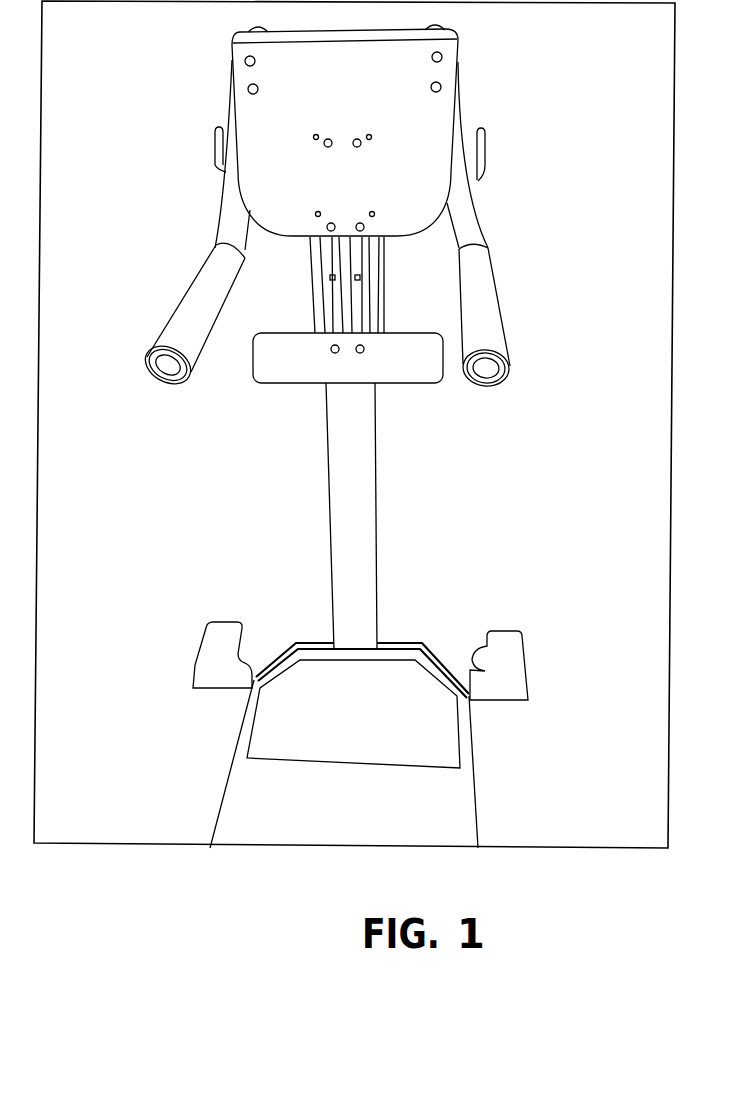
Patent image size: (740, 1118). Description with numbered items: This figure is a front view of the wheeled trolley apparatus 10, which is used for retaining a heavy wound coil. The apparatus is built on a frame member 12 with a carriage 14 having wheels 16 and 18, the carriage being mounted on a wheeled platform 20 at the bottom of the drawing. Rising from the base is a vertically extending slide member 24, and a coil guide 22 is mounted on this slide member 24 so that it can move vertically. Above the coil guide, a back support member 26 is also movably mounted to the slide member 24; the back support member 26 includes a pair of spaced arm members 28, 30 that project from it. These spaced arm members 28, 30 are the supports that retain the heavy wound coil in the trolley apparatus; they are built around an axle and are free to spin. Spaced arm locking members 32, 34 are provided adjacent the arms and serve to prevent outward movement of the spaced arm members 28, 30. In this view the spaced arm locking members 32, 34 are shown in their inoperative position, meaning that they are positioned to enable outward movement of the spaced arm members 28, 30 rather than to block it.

The trolley apparatus 10 is at (376, 436).
The frame member 12 is at (385, 503).
The carriage 14 is at (428, 650).
The wheel 16 is at (522, 632).
The wheel 18 is at (208, 622).
The wheeled platform 20 is at (479, 818).
The coil guide 22 is at (400, 382).
The slide member 24 is at (383, 318).
The back support member 26 is at (384, 181).
The spaced arm member 28 is at (487, 268).
The spaced arm member 30 is at (180, 318).
The spaced arm locking member 32 is at (487, 164).
The spaced arm locking member 34 is at (213, 148).